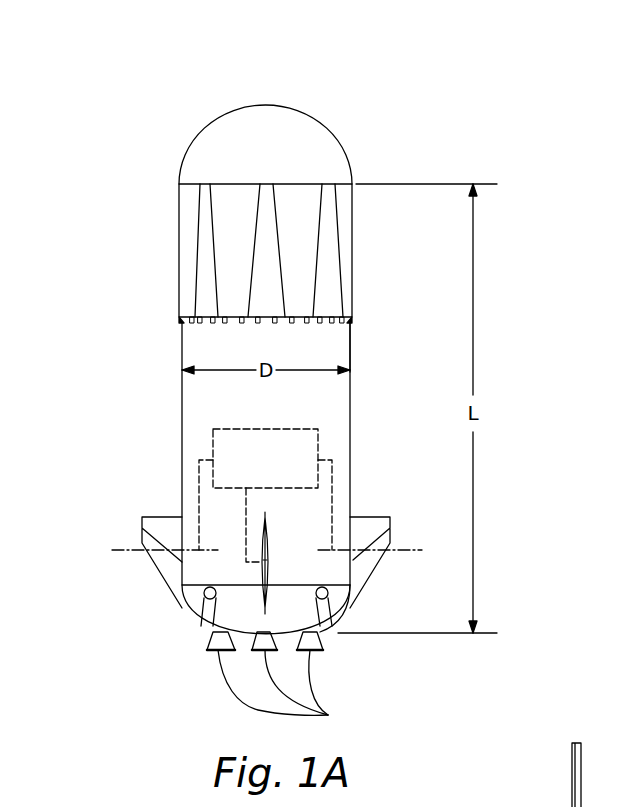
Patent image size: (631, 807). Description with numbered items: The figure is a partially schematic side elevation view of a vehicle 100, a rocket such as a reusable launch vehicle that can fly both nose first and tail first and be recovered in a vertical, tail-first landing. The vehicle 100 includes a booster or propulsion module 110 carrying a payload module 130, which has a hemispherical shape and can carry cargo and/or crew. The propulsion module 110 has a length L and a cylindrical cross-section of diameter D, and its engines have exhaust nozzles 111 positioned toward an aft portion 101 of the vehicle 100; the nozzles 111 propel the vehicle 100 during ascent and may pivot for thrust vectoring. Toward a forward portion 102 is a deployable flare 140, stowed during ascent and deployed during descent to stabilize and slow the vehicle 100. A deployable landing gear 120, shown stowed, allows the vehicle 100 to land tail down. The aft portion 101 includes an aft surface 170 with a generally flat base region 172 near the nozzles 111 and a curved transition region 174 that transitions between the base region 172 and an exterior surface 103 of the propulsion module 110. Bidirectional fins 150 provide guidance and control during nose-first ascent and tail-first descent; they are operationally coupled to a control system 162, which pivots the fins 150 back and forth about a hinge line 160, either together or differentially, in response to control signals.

The vehicle 100 is at (515, 107).
The aft portion 101 is at (110, 677).
The forward portion 102 is at (143, 197).
The exterior surface 103 is at (350, 348).
The propulsion module 110 is at (362, 436).
The engine exhaust nozzles 111 is at (291, 688).
The deployable landing gear 120 is at (178, 596).
The payload module 130 is at (316, 108).
The deployable flare 140 is at (353, 257).
The bidirectional fins 150 is at (142, 520).
The hinge line 160 is at (113, 550).
The control system 162 is at (213, 440).
The aft surface 170 is at (195, 628).
The base region 172 is at (207, 647).
The transition region 174 is at (338, 622).